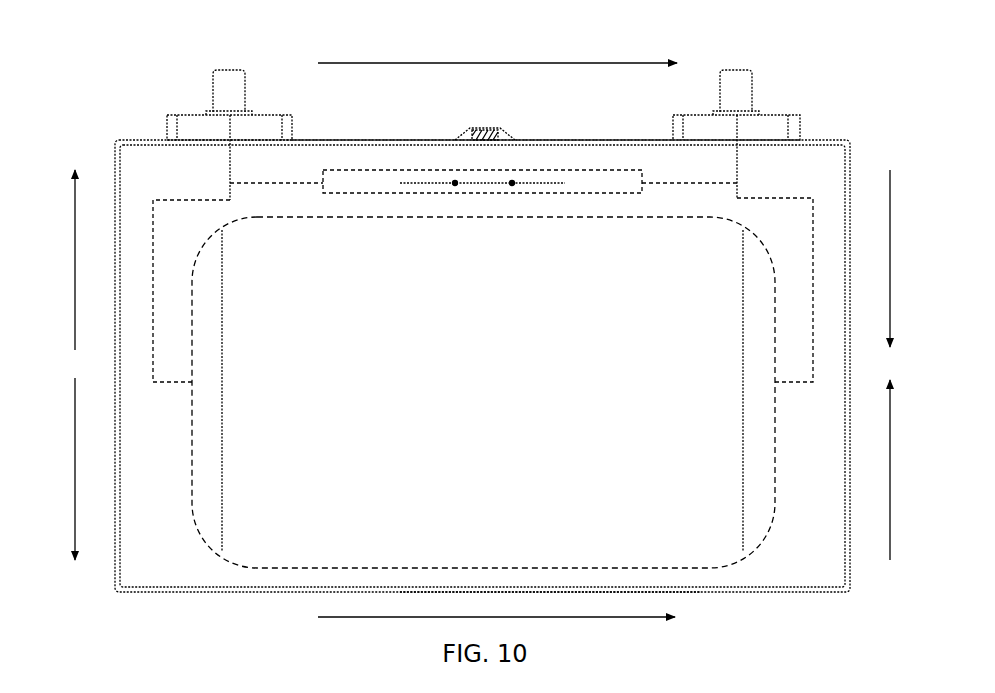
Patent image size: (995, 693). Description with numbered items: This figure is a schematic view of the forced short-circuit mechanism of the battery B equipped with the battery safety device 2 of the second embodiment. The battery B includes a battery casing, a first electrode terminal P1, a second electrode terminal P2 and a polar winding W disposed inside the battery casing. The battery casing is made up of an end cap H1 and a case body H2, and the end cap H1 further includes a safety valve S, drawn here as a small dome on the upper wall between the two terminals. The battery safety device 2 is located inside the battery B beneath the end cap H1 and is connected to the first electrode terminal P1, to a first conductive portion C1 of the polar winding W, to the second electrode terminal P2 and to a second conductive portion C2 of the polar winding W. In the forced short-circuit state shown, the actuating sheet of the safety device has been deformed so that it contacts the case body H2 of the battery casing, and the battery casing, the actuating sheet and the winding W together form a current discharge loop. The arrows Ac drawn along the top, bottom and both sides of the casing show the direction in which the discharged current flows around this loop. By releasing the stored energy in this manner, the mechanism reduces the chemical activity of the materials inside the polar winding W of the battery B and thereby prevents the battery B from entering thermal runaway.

The battery B is at (86, 56).
The first electrode terminal P1 is at (229, 78).
The second electrode terminal P2 is at (737, 78).
The battery safety device 2 is at (368, 184).
The safety valve S is at (475, 132).
The end cap H1 is at (582, 140).
The case body H2 is at (725, 594).
The first conductive portion C1 is at (211, 355).
The second conductive portion C2 is at (751, 355).
The polar winding W is at (278, 555).
The arrow Ac is at (481, 63).